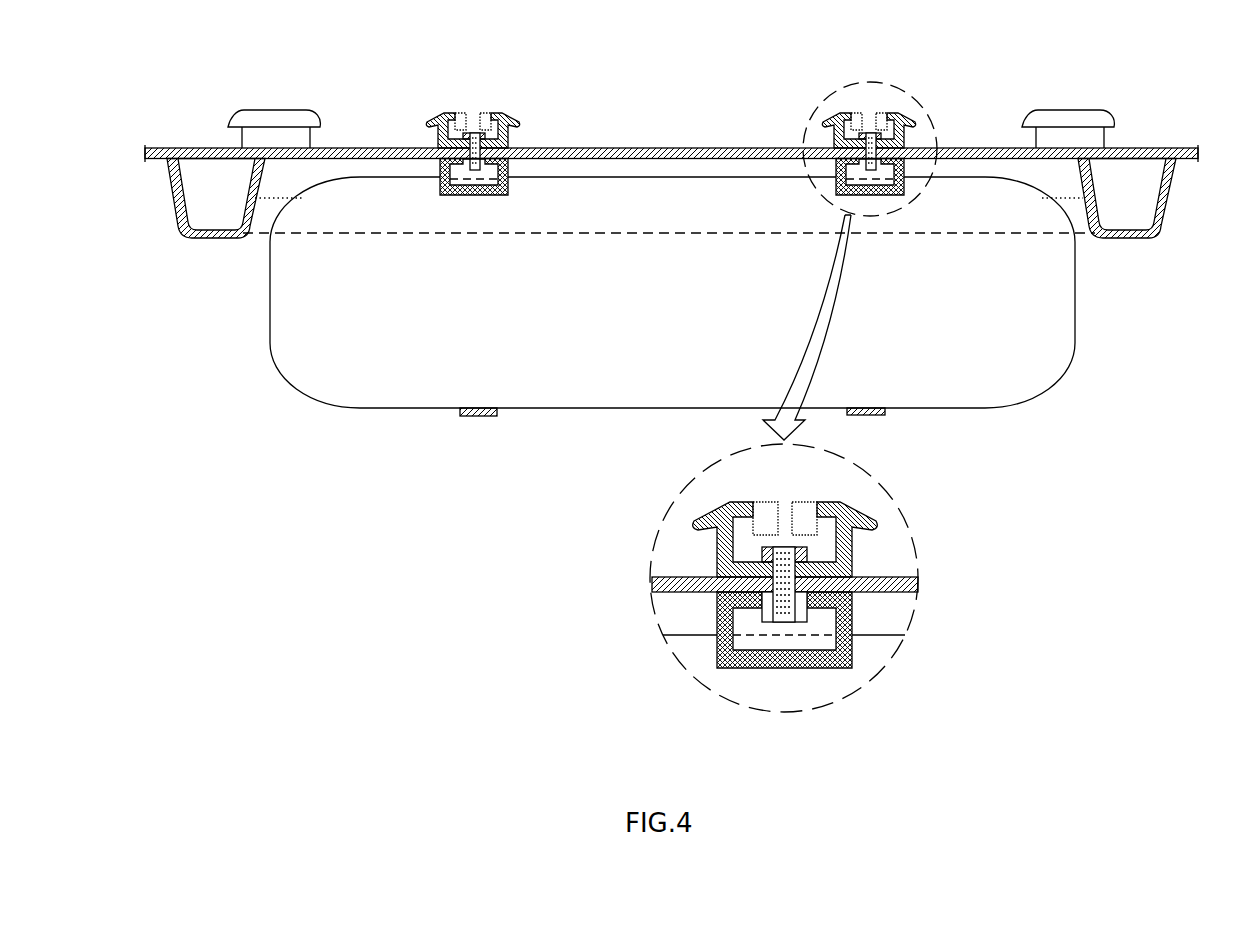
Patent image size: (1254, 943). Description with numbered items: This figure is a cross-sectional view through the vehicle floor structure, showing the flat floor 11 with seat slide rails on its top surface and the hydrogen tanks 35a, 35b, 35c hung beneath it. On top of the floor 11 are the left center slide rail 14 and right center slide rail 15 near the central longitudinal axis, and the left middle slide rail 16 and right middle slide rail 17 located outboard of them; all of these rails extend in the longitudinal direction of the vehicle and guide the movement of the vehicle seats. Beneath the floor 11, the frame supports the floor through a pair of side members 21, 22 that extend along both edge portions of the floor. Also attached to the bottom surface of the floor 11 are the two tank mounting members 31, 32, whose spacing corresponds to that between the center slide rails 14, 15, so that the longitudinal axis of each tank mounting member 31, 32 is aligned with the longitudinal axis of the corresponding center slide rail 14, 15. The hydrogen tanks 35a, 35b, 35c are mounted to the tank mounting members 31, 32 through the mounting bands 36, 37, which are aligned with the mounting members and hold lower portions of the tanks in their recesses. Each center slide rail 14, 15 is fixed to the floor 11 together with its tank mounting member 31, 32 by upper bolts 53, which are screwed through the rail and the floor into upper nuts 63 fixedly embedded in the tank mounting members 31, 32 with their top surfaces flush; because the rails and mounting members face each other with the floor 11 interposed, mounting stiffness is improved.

The floor 11 is at (187, 147).
The left center slide rail 14 is at (437, 98).
The right center slide rail 15 is at (922, 104).
The left middle slide rail 16 is at (278, 98).
The right middle slide rail 17 is at (1067, 98).
The side member 21 is at (174, 210).
The side member 22 is at (1168, 212).
The tank mounting member 31 is at (507, 167).
The tank mounting member 32 is at (834, 174).
The hydrogen tank 35a is at (670, 342).
The hydrogen tank 35b is at (670, 342).
The hydrogen tank 35c is at (383, 396).
The mounting band 36 is at (477, 418).
The mounting band 37 is at (867, 417).
The upper bolt 53 is at (794, 556).
The upper nut 63 is at (802, 613).